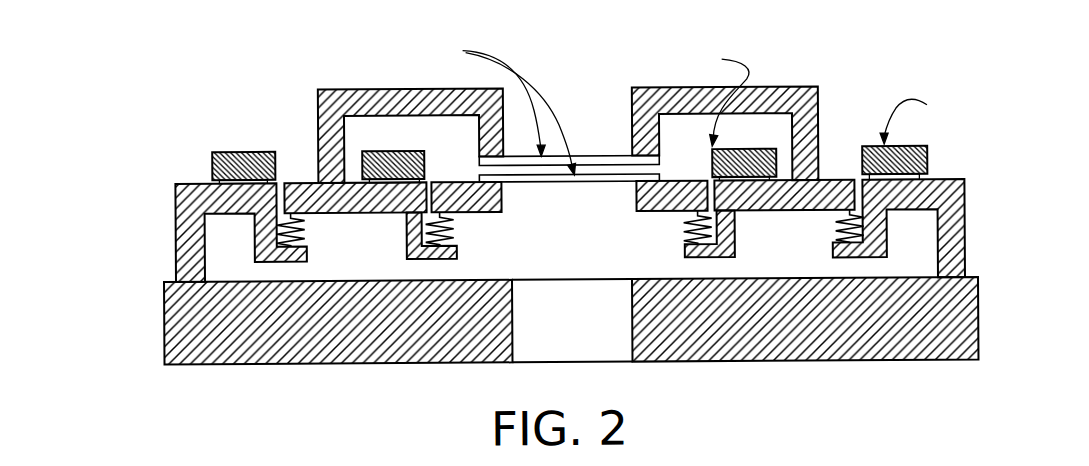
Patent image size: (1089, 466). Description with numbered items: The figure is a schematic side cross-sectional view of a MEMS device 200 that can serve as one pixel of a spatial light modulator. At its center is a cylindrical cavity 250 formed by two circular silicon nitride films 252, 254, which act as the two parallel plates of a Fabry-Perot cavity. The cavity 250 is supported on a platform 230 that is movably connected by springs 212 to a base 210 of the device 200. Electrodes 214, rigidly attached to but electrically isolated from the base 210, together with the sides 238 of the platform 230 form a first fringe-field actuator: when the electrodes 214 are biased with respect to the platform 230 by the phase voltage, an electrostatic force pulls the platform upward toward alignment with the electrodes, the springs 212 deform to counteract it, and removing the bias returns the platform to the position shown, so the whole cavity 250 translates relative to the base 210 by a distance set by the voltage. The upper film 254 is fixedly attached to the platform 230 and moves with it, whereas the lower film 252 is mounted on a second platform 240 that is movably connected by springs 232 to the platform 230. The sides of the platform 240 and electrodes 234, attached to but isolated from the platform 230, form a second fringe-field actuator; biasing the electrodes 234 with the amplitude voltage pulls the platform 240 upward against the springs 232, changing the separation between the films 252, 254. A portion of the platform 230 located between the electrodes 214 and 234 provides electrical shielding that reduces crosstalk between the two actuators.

The MEMS device 200 is at (95, 407).
The base 210 is at (978, 277).
The springs 212 is at (307, 231).
The electrodes 214 is at (227, 150).
The platform 230 is at (385, 213).
The springs 232 is at (458, 231).
The electrodes 234 is at (372, 150).
The sides of platform 238 is at (300, 181).
The platform 240 is at (450, 181).
The cylindrical cavity 250 is at (555, 196).
The SiN film 252 is at (612, 182).
The SiN film 254 is at (604, 155).